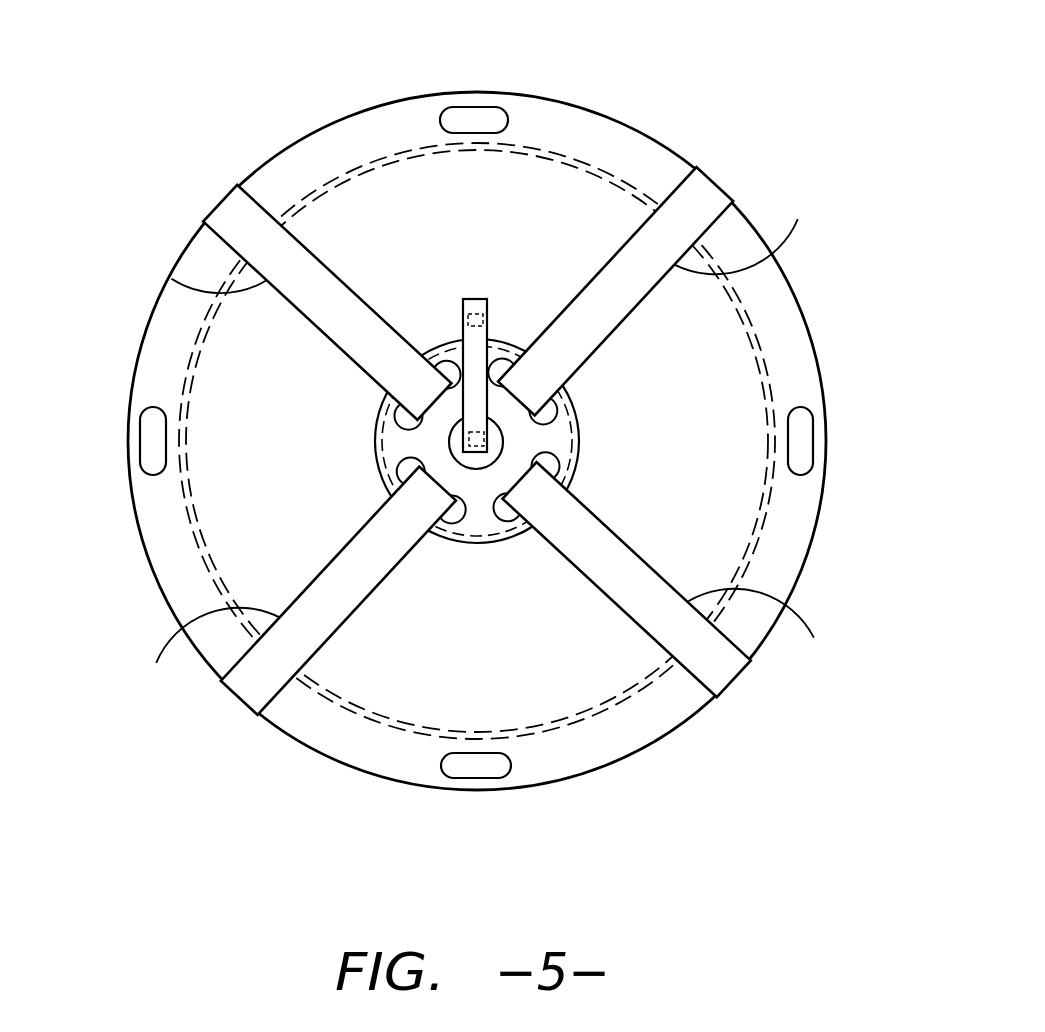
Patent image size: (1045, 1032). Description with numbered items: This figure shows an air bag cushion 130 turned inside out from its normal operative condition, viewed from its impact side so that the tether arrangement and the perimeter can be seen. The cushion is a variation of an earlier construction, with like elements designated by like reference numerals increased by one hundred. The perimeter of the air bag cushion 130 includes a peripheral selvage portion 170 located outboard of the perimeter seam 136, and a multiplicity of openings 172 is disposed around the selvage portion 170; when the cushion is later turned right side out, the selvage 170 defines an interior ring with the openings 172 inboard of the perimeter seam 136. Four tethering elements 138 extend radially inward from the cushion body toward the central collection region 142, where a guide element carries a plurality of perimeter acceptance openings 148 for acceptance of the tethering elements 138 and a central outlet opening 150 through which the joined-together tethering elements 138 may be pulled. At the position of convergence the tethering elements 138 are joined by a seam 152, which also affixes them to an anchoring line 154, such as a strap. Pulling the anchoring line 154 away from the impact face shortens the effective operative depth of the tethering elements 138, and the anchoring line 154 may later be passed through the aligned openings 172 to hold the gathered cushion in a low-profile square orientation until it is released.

The air bag cushion 130 is at (471, 431).
The perimeter seam 136 is at (563, 152).
The tethering elements 138 is at (797, 219).
The collection region 142 is at (581, 428).
The perimeter acceptance openings 148 is at (560, 459).
The central outlet opening 150 is at (447, 442).
The seam 152 is at (473, 452).
The anchoring line 154 is at (476, 298).
The peripheral selvage portion 170 is at (352, 143).
The openings 172 is at (508, 126).